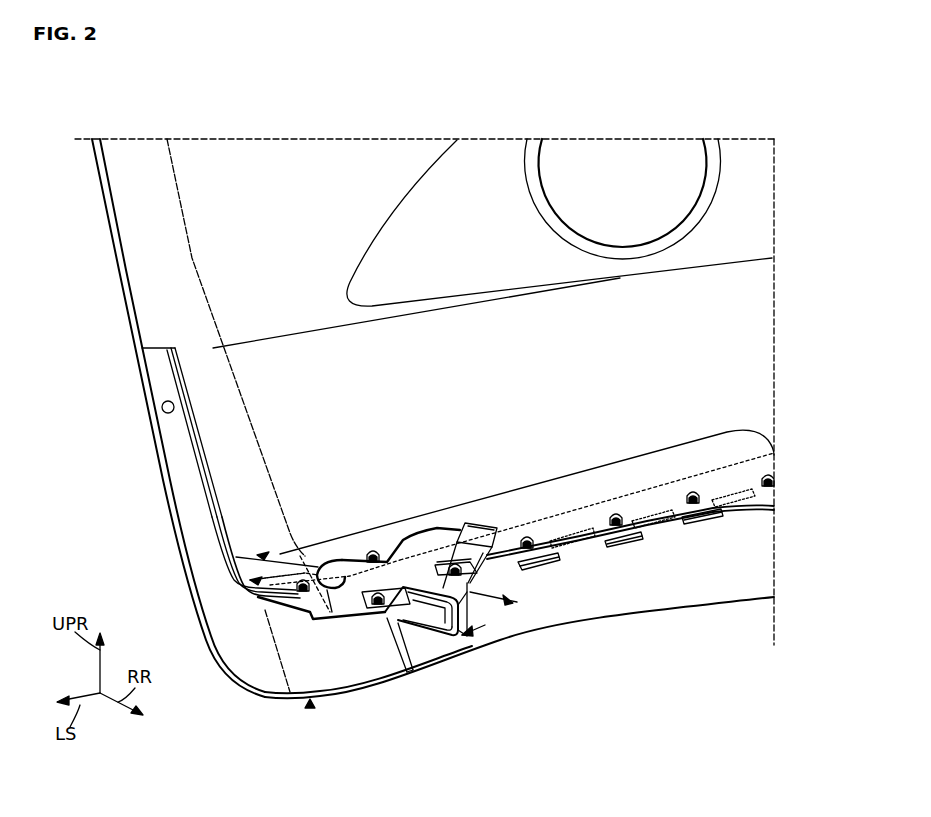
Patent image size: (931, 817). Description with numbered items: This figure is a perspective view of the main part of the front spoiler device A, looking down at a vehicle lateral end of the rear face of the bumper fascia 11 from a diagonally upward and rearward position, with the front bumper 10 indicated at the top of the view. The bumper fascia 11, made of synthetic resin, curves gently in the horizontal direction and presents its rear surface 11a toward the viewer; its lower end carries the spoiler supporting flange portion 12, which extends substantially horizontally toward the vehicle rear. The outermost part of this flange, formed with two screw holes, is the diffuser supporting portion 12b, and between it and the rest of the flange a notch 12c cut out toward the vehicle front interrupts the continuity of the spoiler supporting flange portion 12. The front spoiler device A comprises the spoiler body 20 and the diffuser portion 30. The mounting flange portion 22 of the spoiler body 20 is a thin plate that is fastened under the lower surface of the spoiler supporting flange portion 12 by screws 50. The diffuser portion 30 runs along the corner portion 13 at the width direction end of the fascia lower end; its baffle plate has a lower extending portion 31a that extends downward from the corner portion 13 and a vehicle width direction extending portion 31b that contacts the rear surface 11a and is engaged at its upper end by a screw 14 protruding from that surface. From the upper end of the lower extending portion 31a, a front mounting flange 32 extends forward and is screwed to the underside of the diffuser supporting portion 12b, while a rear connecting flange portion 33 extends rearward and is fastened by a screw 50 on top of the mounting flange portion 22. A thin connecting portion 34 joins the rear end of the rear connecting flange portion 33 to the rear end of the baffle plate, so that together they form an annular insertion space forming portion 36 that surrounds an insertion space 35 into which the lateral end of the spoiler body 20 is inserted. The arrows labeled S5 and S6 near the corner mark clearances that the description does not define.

The front bumper 10 is at (248, 155).
The bumper fascia 11 is at (352, 184).
The rear surface 11a is at (148, 240).
The spoiler supporting flange portion 12 is at (310, 565).
The diffuser supporting portion 12b is at (693, 460).
The notch 12c is at (434, 540).
The corner portion 13 is at (255, 568).
The screw 14 is at (152, 410).
The spoiler body 20 is at (478, 676).
The mounting flange portion 22 is at (553, 568).
The diffuser portion 30 is at (236, 694).
The lower extending portion 31a is at (325, 700).
The vehicle width direction extending portion 31b is at (190, 508).
The front mounting flange 32 is at (340, 558).
The rear connecting flange portion 33 is at (402, 553).
The connecting portion 34 is at (430, 640).
The insertion space 35 is at (400, 672).
The insertion space forming portion 36 is at (465, 642).
The screw 50 is at (301, 576).
The gap S5 is at (392, 577).
The gap S6 is at (360, 607).
The front spoiler device A is at (312, 708).